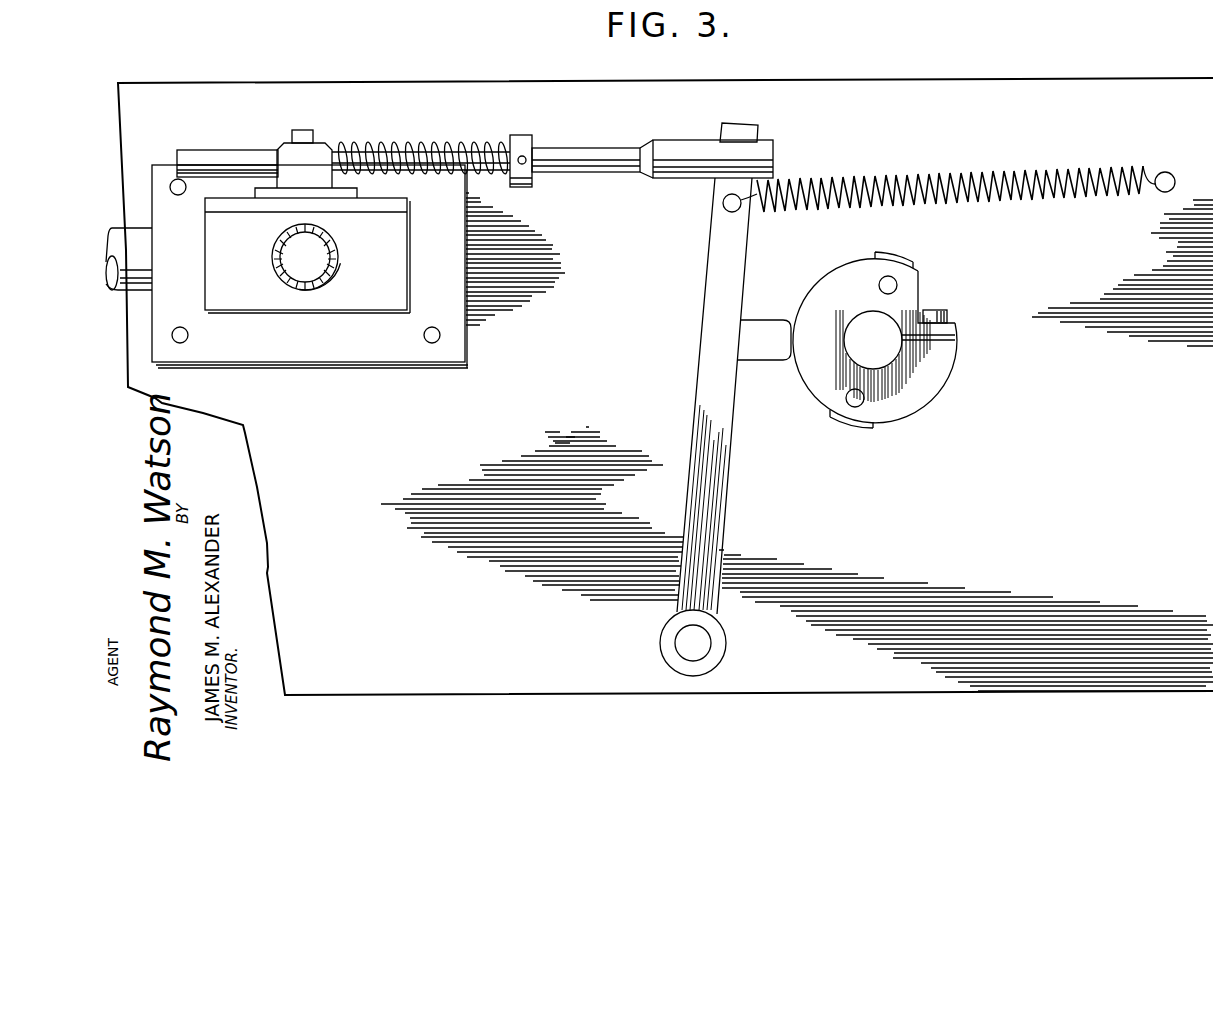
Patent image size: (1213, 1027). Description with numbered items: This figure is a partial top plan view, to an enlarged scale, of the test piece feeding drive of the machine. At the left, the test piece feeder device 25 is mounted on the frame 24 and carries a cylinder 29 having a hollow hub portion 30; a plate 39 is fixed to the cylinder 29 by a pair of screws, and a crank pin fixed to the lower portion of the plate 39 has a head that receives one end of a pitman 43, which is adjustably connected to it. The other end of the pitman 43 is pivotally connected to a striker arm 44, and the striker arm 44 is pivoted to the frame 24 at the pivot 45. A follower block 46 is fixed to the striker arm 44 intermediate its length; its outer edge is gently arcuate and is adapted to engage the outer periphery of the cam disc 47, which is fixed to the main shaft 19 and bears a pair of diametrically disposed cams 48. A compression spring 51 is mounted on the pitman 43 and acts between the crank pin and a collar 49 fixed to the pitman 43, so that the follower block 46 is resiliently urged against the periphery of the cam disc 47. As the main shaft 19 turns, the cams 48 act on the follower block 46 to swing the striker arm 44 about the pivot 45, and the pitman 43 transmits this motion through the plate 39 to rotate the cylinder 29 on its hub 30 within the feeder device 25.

The main shaft 19 is at (856, 322).
The frame 24 is at (888, 534).
The test piece feeder device 25 is at (250, 279).
The cylinder 29 is at (255, 193).
The hollow hub portion 30 is at (314, 176).
The plate 39 is at (205, 204).
The pitman 43 is at (233, 154).
The striker arm 44 is at (724, 528).
The pivot 45 is at (700, 642).
The follower block 46 is at (778, 337).
The cam disc 47 is at (940, 370).
The cams 48 is at (913, 257).
The collar 49 is at (530, 141).
The compression spring 51 is at (370, 147).